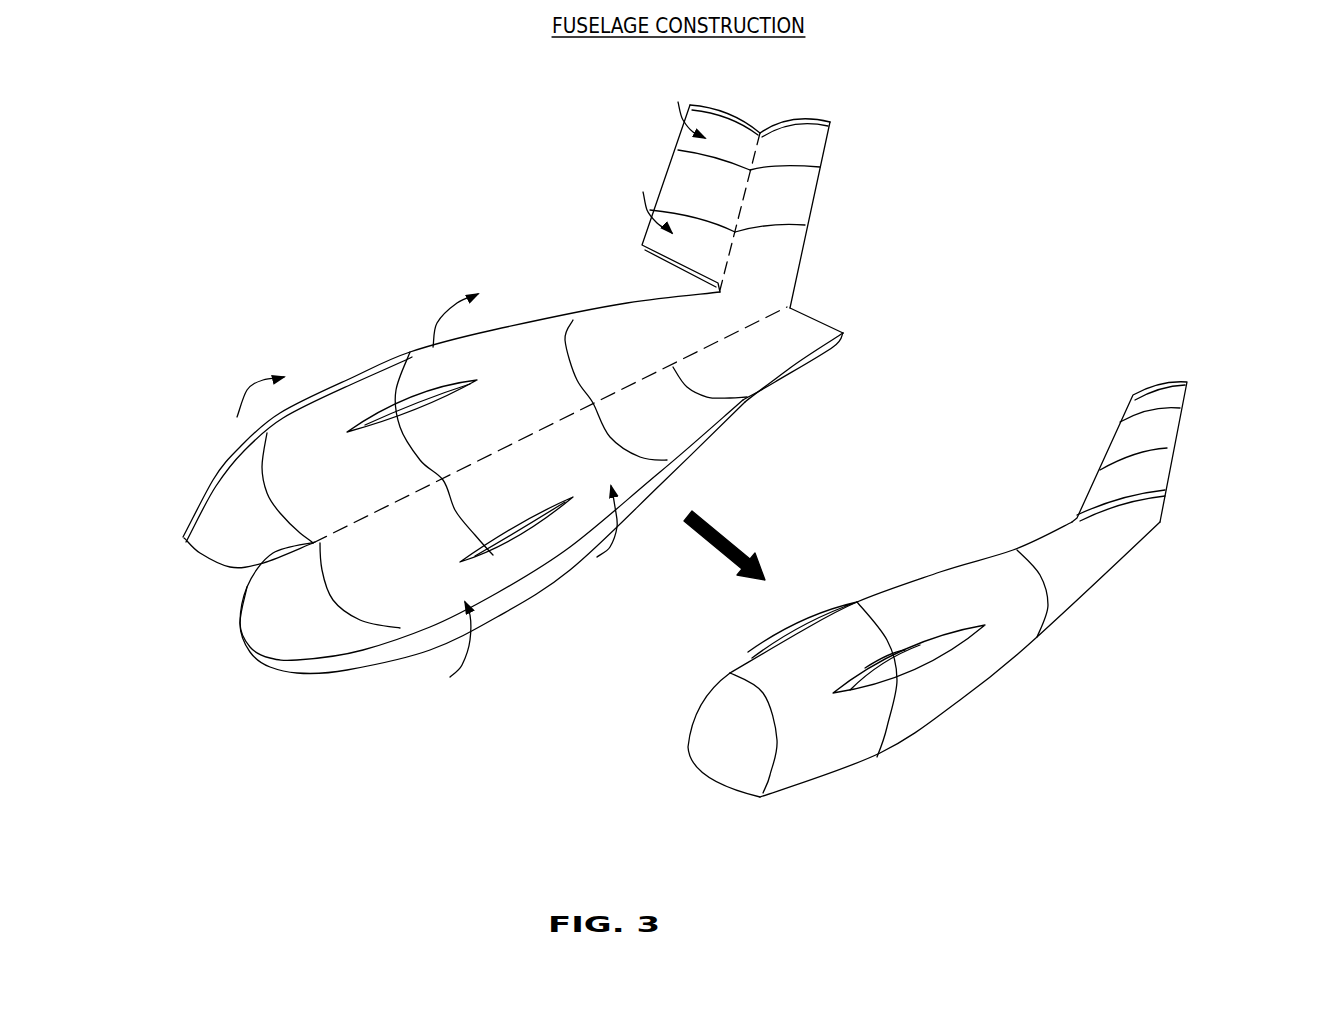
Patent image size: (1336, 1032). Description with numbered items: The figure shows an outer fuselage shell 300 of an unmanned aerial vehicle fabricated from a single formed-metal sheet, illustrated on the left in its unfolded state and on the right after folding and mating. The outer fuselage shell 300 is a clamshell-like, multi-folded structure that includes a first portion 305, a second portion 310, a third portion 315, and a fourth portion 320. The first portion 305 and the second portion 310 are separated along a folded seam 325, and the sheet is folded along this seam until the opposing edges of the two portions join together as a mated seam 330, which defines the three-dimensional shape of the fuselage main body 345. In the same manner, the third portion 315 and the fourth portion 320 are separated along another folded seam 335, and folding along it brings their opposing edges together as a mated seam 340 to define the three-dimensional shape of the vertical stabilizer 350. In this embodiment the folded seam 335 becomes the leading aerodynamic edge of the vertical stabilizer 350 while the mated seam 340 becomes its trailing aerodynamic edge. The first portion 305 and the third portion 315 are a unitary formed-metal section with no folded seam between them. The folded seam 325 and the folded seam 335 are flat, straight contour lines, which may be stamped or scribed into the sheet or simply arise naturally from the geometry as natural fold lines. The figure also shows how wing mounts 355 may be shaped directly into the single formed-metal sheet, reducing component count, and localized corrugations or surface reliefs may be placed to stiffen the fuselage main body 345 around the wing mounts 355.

The outer fuselage shell 300 is at (1160, 679).
The first portion 305 is at (346, 484).
The second portion 310 is at (419, 576).
The third portion 315 is at (778, 260).
The fourth portion 320 is at (715, 195).
The folded seam 325 is at (747, 403).
The mated seam 330 is at (950, 560).
The folded seam 335 is at (748, 185).
The mated seam 340 is at (1183, 437).
The fuselage main body 345 is at (666, 785).
The vertical stabilizer 350 is at (844, 302).
The wing mounts 355 is at (442, 398).